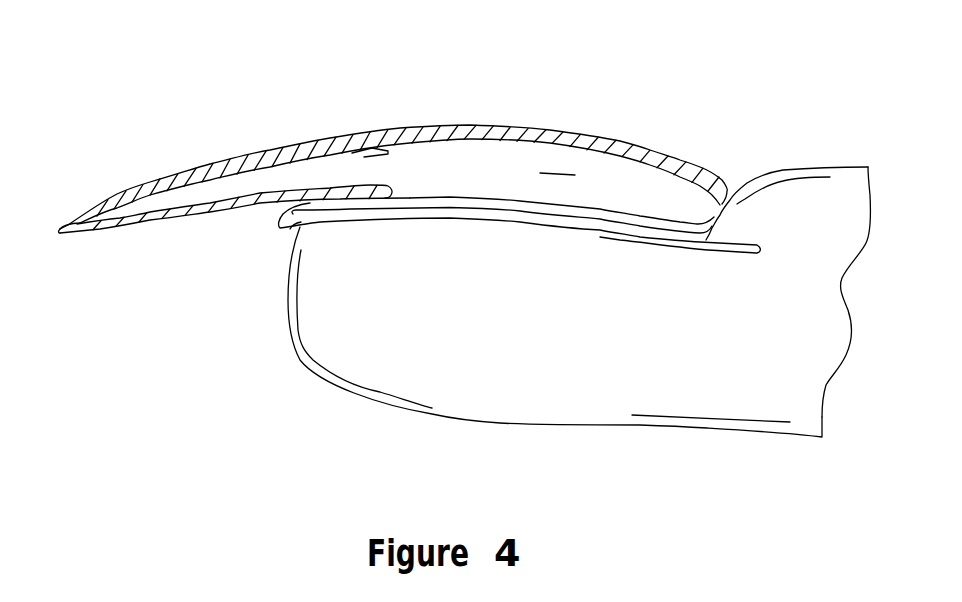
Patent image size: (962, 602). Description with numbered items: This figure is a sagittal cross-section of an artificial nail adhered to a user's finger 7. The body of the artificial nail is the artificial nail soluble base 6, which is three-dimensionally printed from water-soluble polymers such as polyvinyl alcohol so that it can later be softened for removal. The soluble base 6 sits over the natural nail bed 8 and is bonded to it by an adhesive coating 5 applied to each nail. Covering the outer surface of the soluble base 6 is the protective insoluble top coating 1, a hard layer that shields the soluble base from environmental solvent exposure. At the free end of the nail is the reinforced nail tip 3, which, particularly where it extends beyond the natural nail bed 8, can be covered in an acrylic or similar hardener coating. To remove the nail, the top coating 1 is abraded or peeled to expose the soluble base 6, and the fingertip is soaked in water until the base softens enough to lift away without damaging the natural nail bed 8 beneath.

The protective insoluble top coating 1 is at (393, 128).
The reinforced nail tip 3 is at (78, 229).
The adhesive coating 5 is at (292, 212).
The artificial nail soluble base 6 is at (557, 173).
The user's finger 7 is at (590, 408).
The natural nail bed 8 is at (290, 229).